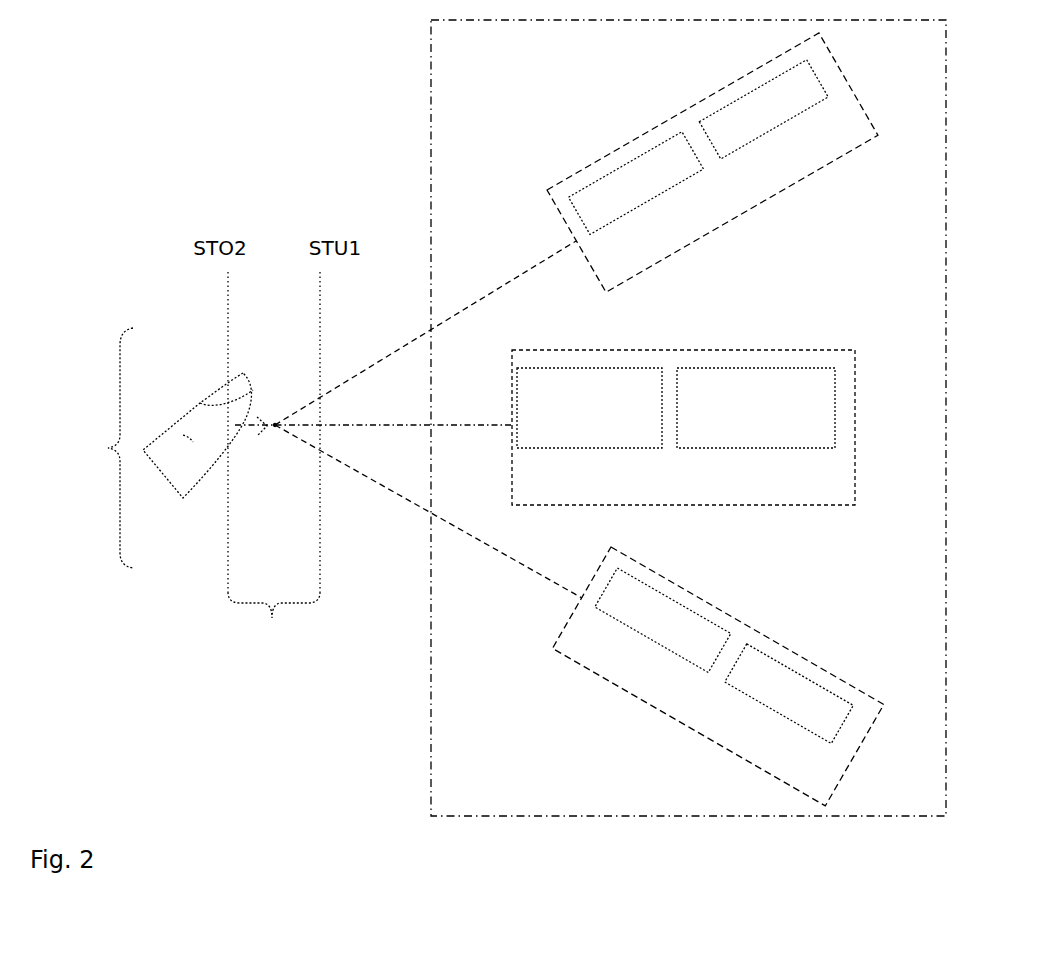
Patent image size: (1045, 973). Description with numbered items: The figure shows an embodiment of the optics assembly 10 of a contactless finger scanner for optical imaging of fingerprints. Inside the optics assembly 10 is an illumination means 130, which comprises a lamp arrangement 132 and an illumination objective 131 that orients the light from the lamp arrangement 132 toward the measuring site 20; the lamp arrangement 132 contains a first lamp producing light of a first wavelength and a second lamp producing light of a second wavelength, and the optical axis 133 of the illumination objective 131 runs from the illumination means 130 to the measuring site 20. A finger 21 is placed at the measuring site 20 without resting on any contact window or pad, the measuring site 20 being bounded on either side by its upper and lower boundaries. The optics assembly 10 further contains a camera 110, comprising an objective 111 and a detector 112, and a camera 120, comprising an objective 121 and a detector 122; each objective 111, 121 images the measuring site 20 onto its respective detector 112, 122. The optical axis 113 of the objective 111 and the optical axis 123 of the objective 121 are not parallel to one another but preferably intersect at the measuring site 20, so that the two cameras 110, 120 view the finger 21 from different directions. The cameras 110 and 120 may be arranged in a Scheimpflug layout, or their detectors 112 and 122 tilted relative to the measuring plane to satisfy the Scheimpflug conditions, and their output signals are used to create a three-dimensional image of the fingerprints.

The optics assembly 10 is at (844, 259).
The measuring site 20 is at (187, 496).
The finger 21 is at (188, 407).
The camera 110 is at (562, 217).
The objective 111 is at (620, 166).
The detector 112 is at (728, 103).
The optical axis 113 is at (385, 357).
The camera 120 is at (600, 678).
The objective 121 is at (731, 632).
The detector 122 is at (802, 674).
The optical axis 123 is at (372, 482).
The illumination means 130 is at (825, 350).
The illumination objective 131 is at (587, 365).
The lamp arrangement 132 is at (768, 365).
The optical axis 133 is at (440, 430).